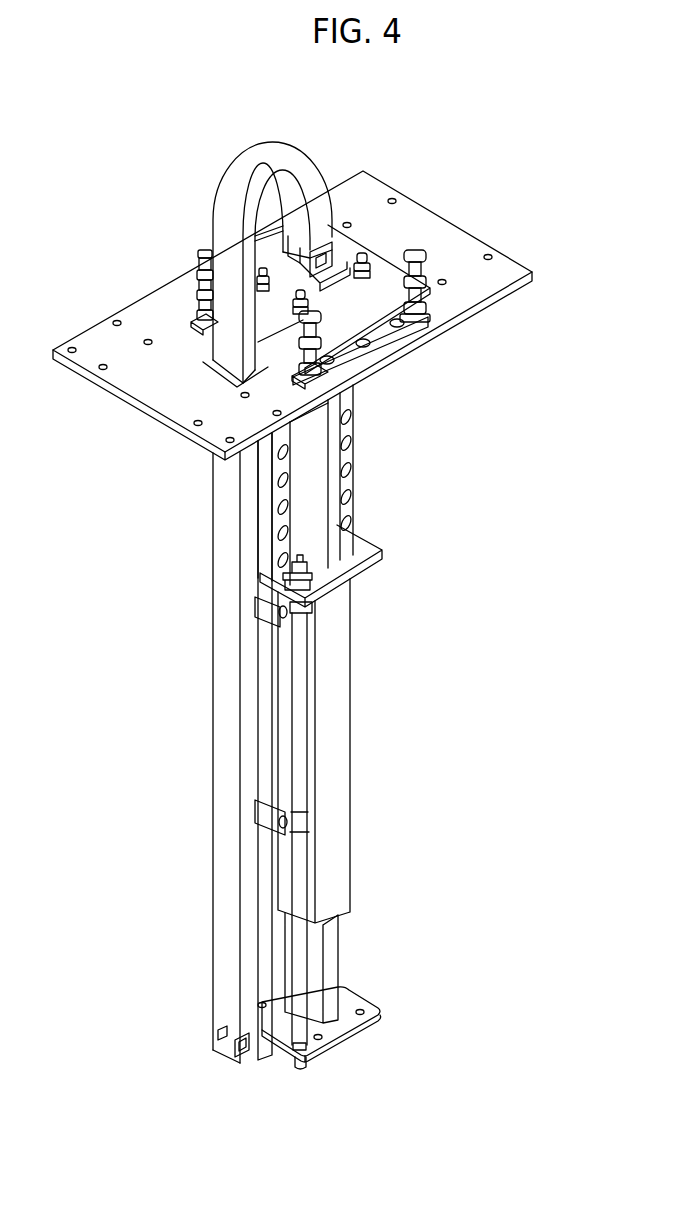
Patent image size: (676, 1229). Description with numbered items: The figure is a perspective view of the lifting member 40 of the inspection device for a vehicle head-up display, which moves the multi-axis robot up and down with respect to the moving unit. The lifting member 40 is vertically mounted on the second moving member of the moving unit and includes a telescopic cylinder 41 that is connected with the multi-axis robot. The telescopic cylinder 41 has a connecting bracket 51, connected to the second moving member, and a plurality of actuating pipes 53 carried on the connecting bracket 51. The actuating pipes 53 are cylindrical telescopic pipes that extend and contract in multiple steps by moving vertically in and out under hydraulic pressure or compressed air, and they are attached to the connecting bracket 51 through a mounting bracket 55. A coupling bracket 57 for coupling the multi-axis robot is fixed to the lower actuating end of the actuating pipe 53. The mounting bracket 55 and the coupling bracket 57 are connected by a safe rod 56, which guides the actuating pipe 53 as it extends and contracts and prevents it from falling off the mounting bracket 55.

The lifting member 40 is at (373, 116).
The telescopic cylinder 41 is at (450, 478).
The connecting bracket 51 is at (423, 228).
The actuating pipes 53 is at (342, 711).
The mounting bracket 55 is at (350, 453).
The safe rod 56 is at (298, 762).
The coupling bracket 57 is at (355, 994).